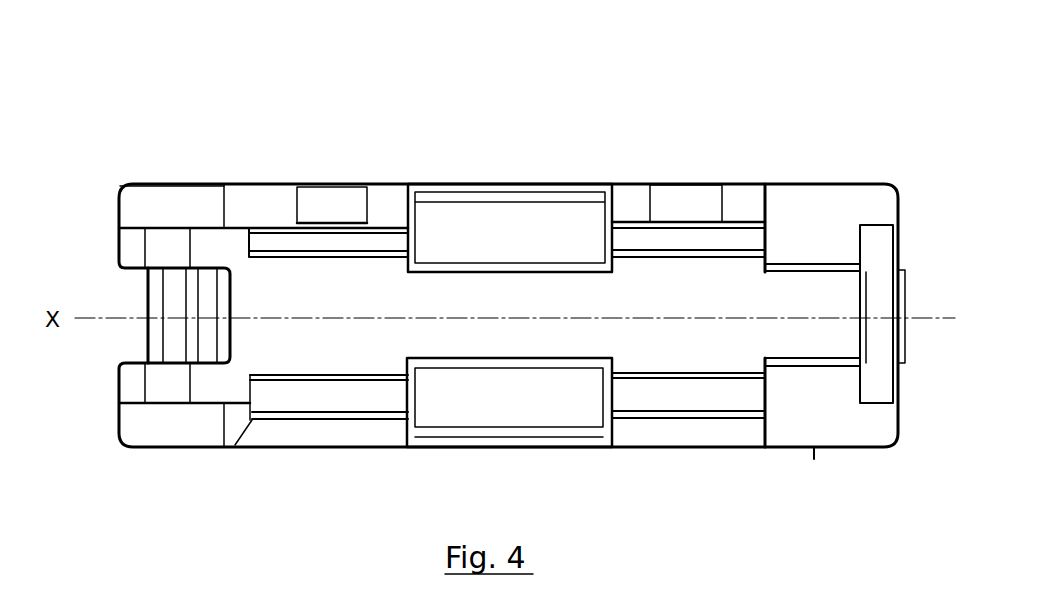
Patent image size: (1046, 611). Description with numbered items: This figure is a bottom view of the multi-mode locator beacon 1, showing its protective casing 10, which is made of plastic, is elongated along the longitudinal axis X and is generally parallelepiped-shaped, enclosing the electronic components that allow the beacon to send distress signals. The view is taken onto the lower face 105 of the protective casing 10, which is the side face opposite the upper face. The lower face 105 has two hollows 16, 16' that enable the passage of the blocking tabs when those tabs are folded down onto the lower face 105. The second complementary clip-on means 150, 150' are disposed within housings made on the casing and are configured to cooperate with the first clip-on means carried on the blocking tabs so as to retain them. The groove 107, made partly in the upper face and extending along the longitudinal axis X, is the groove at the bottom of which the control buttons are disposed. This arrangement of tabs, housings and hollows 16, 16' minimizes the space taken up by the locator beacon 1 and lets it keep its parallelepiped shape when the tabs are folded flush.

The multi-mode locator beacon 1 is at (825, 148).
The protective casing 10 is at (253, 180).
The hollow 16 is at (313, 298).
The hollow 16' is at (707, 298).
The second complementary clip-on means 150 is at (330, 468).
The second complementary clip-on means 150' is at (688, 467).
The lower face 105 is at (547, 437).
The groove 107 is at (462, 340).